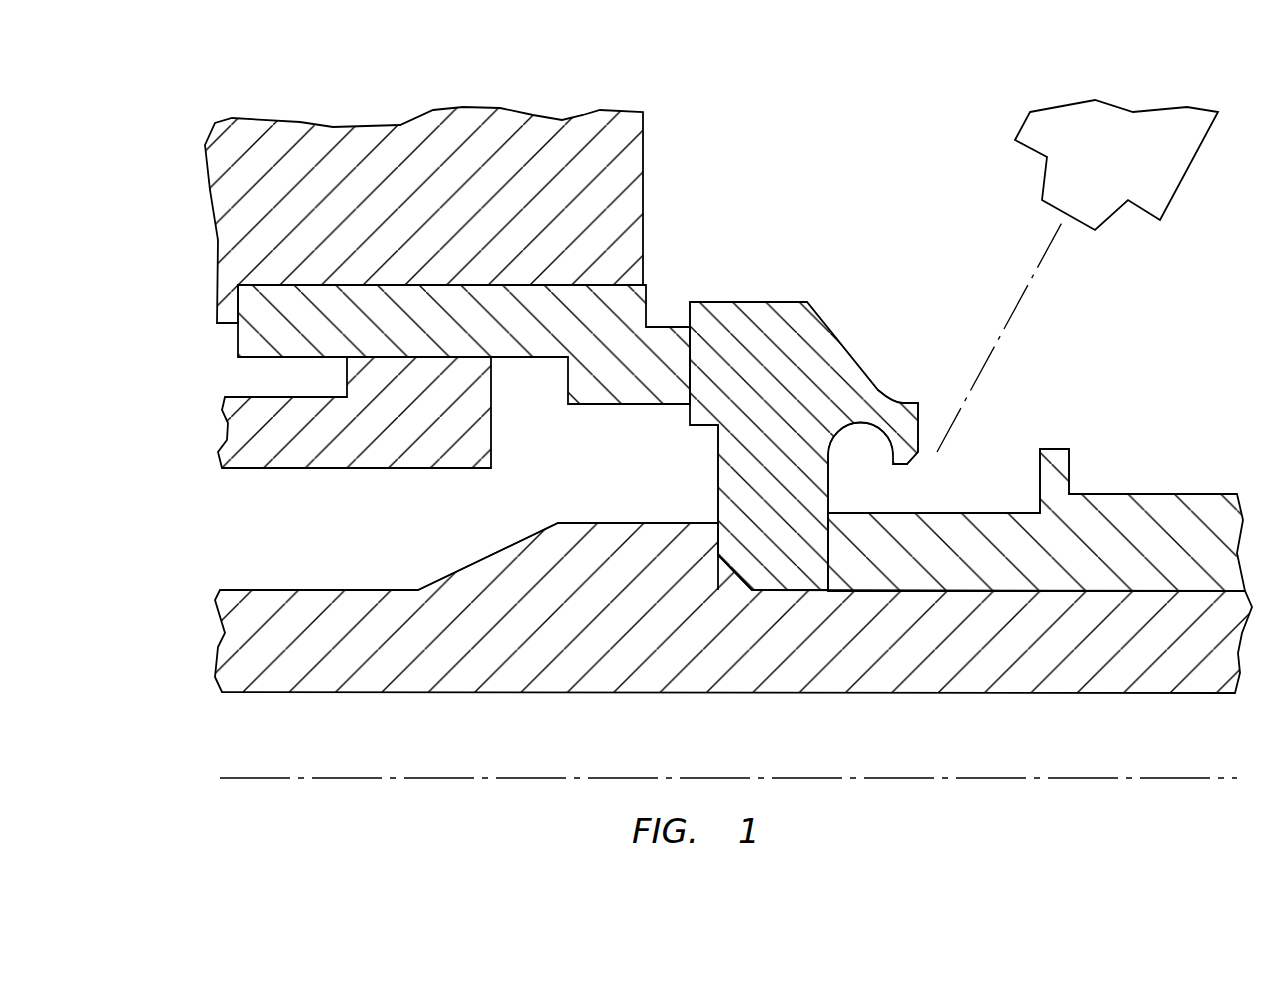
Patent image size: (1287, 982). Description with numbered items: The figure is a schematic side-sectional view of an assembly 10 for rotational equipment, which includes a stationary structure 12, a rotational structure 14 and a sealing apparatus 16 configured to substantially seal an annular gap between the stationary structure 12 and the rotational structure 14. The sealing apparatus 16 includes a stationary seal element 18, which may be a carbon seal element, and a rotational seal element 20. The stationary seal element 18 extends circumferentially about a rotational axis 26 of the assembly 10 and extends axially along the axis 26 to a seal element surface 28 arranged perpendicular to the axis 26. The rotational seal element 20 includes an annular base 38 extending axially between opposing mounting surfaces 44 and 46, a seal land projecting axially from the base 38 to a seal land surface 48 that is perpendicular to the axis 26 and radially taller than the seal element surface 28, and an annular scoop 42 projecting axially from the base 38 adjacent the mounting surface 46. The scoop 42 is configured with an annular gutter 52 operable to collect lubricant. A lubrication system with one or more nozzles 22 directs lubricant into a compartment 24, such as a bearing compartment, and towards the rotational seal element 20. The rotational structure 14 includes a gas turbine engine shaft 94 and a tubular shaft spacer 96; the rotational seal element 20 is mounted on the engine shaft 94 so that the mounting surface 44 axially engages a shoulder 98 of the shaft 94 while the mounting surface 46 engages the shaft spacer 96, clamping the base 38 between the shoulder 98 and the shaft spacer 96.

The assembly 10 is at (851, 110).
The stationary structure 12 is at (543, 110).
The rotational structure 14 is at (478, 700).
The sealing apparatus 16 is at (703, 275).
The stationary seal element 18 is at (580, 410).
The rotational seal element 20 is at (838, 325).
The nozzle 22 is at (1108, 220).
The compartment 24 is at (848, 193).
The rotational axis 26 is at (1130, 778).
The seal element surface 28 is at (700, 335).
The base 38 is at (788, 562).
The scoop 42 is at (885, 412).
The mounting surface 44 is at (718, 480).
The mounting surface 46 is at (830, 483).
The seal land surface 48 is at (689, 313).
The gutter 52 is at (876, 463).
The engine shaft 94 is at (1075, 693).
The shaft spacer 96 is at (1155, 494).
The shoulder 98 is at (605, 523).